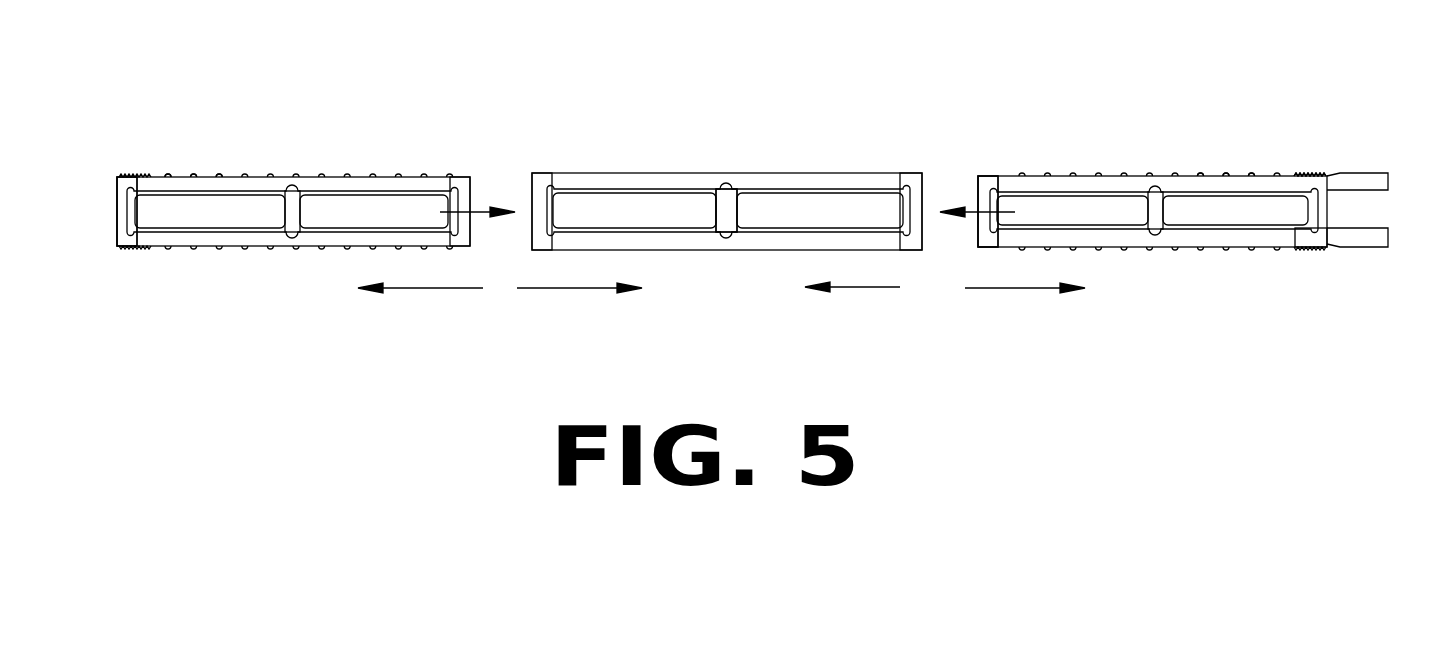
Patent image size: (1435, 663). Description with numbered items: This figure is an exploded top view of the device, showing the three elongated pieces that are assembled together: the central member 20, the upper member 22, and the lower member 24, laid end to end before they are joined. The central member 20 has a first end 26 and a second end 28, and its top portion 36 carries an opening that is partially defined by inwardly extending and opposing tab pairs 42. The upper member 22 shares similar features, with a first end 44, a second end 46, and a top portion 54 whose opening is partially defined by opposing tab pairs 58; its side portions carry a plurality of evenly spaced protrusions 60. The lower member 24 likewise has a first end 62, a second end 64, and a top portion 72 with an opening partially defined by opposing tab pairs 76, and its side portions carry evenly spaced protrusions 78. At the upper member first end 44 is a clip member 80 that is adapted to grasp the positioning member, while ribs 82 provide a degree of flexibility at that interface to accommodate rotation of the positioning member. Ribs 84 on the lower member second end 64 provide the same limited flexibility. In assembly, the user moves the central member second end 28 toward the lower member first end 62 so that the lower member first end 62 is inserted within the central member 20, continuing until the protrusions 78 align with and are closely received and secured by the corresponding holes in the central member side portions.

The central member 20 is at (654, 173).
The upper member 22 is at (1134, 176).
The lower member 24 is at (258, 177).
The first end 26 is at (866, 173).
The second end 28 is at (556, 173).
The top portion 36 is at (755, 173).
The tab pairs 42 is at (735, 196).
The first end 44 is at (1313, 247).
The second end 46 is at (1003, 247).
The top portion 54 is at (1012, 176).
The tab pairs 58 is at (1158, 194).
The protrusions 60 is at (1200, 177).
The first end 62 is at (447, 177).
The second end 64 is at (133, 246).
The top portion 72 is at (325, 190).
The tab pairs 76 is at (283, 197).
The protrusions 78 is at (168, 177).
The clip member 80 is at (1388, 177).
The ribs 82 is at (1313, 177).
The ribs 84 is at (131, 177).